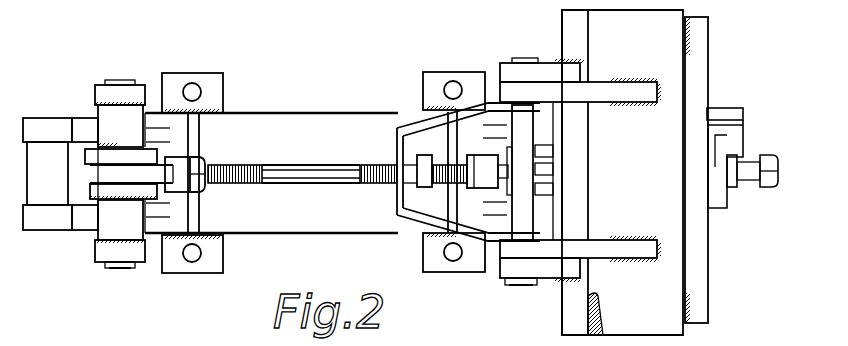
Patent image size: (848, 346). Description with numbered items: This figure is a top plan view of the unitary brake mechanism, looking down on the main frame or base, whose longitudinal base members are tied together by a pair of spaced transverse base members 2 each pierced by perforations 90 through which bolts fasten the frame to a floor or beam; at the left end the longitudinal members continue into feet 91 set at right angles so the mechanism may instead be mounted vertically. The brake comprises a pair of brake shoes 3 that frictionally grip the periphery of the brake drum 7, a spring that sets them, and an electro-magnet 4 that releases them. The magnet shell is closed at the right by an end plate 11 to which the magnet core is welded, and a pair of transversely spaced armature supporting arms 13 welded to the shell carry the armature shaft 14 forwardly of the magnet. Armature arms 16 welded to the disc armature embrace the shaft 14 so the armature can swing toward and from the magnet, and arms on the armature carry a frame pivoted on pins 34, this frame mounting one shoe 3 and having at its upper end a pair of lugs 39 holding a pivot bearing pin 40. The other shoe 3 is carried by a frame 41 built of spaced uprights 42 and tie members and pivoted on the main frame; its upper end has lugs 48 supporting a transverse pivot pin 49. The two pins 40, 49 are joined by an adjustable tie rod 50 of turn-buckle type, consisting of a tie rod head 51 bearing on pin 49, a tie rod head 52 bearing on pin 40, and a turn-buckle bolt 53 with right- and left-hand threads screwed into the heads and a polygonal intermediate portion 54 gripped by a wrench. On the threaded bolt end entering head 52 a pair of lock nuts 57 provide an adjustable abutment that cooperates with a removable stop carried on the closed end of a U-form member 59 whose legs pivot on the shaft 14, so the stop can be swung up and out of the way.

The transverse base members 2 is at (224, 95).
The brake shoes 3 is at (197, 143).
The electro-magnet 4 is at (622, 172).
The brake drum 7 is at (282, 228).
The end plate 11 is at (697, 277).
The armature supporting arms 13 is at (602, 89).
The armature shaft 14 is at (532, 171).
The armature arms 16 is at (550, 70).
The pins 34 is at (547, 155).
The lugs 39 is at (548, 187).
The pivot bearing pin 40 is at (520, 286).
The frame 41 is at (134, 172).
The uprights 42 is at (95, 98).
The lugs 48 is at (87, 158).
The transverse pivot pin 49 is at (118, 269).
The tie rod 50 is at (263, 166).
The tie rod head 51 is at (147, 174).
The tie rod head 52 is at (540, 172).
The turn-buckle bolt 53 is at (317, 168).
The intermediate portion 54 is at (337, 180).
The lock nuts 57 is at (421, 188).
The U-form member 59 is at (418, 218).
The perforations 90 is at (199, 85).
The feet 91 is at (39, 121).